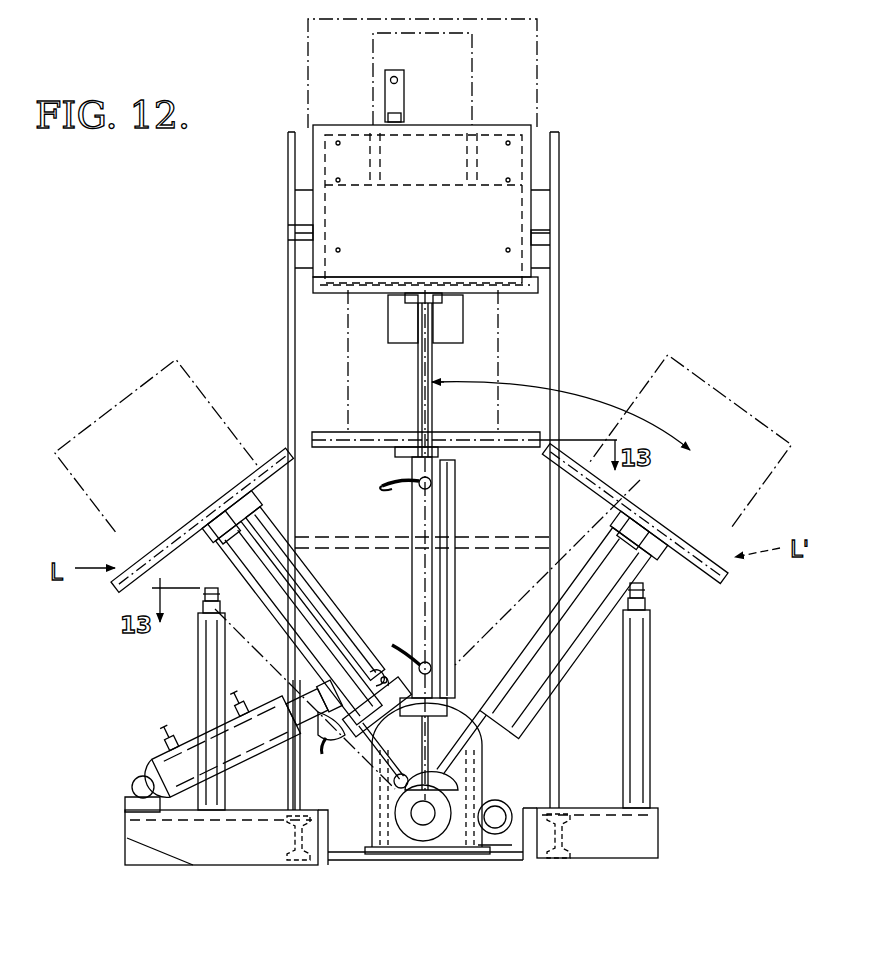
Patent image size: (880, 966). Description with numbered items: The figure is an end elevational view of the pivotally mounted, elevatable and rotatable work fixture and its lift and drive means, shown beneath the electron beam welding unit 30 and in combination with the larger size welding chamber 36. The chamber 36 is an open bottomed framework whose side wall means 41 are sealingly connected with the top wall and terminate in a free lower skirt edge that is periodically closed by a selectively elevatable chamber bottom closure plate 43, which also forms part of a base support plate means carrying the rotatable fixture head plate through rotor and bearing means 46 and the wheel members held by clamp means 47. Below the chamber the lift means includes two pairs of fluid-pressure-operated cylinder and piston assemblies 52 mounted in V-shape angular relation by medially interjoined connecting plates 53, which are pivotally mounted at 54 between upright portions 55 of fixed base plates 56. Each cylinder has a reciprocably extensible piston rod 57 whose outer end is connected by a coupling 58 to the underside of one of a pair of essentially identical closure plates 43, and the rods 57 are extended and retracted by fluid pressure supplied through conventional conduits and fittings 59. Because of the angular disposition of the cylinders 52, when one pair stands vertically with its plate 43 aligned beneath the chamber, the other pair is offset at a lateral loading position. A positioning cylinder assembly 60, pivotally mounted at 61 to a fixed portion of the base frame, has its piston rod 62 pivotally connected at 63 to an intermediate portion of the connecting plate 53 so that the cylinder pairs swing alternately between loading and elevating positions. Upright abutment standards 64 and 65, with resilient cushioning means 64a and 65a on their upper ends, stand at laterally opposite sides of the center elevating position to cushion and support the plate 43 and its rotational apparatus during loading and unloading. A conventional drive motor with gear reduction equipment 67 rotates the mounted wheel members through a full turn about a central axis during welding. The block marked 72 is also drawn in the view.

The electron beam welding unit 30 is at (537, 50).
The welding chamber 36 is at (507, 213).
The side wall means 41 is at (404, 100).
The chamber bottom closure plate 43 is at (313, 292).
The rotor and bearing means 46 is at (108, 520).
The clamp means 47 is at (295, 373).
The cylinder and piston assemblies 52 is at (410, 565).
The connecting plates 53 is at (447, 584).
The pivot 54 is at (430, 810).
The upright portions 55 is at (462, 722).
The fixed base plates 56 is at (368, 860).
The piston rods 57 is at (418, 368).
The couplings 58 is at (410, 305).
The fluid conduits and fittings 59 is at (413, 478).
The positioning cylinder assembly 60 is at (187, 740).
The pivotal mounting 61 is at (128, 781).
The piston rod 62 is at (333, 717).
The pivotal connection 63 is at (388, 660).
The upright abutment standard 64 is at (198, 672).
The resilient cushioning means 64a is at (204, 618).
The upright abutment standard 65 is at (652, 680).
The resilient cushioning means 65a is at (648, 592).
The drive motor and gear reduction equipment 67 is at (490, 793).
The blocks 72 is at (460, 322).